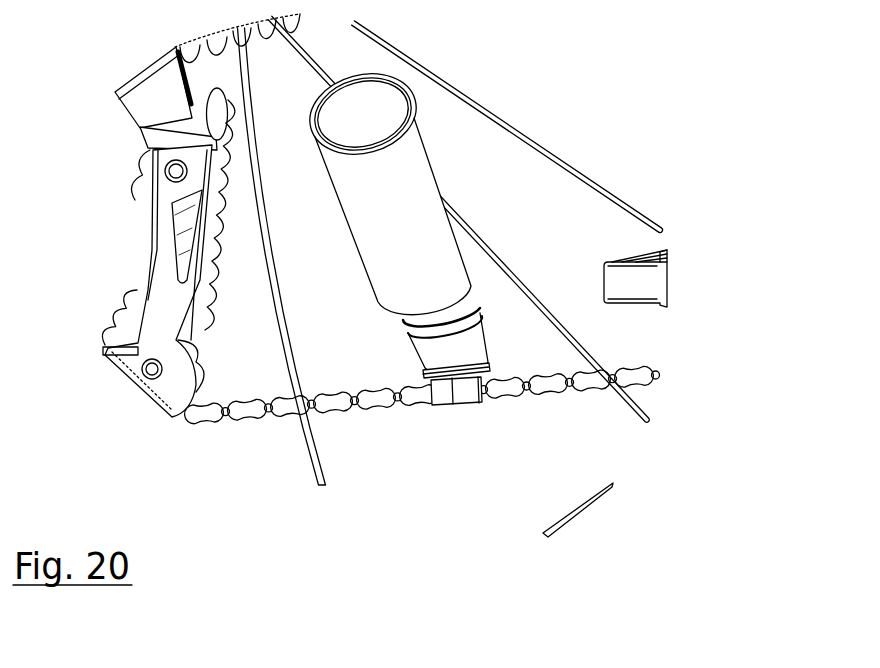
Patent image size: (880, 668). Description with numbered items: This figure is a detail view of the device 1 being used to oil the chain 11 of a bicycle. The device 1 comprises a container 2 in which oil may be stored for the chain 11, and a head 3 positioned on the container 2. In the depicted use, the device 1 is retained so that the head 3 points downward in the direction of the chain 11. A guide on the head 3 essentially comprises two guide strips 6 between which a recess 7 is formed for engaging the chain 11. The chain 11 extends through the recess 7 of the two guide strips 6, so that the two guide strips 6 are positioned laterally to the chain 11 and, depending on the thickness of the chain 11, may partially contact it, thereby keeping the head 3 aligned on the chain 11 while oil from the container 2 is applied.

The device 1 is at (546, 280).
The container 2 is at (381, 229).
The head 3 is at (470, 336).
The guide strips 6 is at (465, 392).
The recess 7 is at (478, 402).
The chain 11 is at (252, 408).